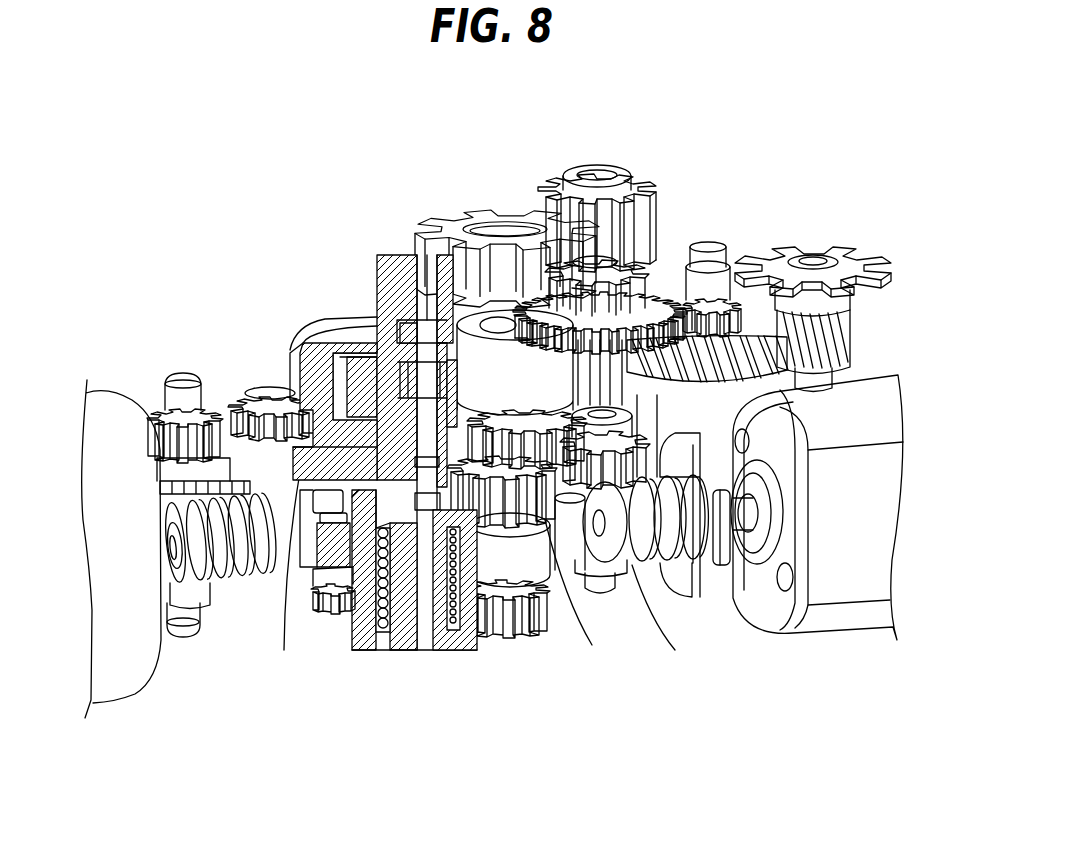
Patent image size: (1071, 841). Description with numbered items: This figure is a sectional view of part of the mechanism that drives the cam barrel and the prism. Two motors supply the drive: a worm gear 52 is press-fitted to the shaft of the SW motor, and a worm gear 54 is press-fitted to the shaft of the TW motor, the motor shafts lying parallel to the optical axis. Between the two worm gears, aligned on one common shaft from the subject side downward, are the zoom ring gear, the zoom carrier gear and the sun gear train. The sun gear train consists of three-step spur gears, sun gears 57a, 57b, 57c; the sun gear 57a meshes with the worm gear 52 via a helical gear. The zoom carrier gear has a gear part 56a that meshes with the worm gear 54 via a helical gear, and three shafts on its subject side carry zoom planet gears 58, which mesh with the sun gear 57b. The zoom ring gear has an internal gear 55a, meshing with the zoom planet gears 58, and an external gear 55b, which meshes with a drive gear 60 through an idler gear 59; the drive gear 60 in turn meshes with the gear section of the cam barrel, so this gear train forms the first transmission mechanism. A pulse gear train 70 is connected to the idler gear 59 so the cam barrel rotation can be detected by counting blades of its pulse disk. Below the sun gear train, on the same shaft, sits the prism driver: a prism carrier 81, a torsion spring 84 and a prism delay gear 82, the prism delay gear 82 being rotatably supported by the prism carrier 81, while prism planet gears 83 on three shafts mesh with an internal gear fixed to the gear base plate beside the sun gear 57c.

The worm gear 52 is at (663, 572).
The worm gear 54 is at (228, 583).
The internal gear 55a is at (302, 342).
The external gear 55b is at (390, 297).
The gear part 56a is at (545, 560).
The sun gear 57a is at (297, 555).
The sun gear 57b is at (340, 397).
The sun gear 57c is at (365, 615).
The zoom planet gears 58 is at (337, 387).
The idler gear 59 is at (413, 235).
The drive gear 60 is at (637, 180).
The pulse gear train 70 is at (772, 250).
The prism carrier 81 is at (493, 655).
The prism delay gear 82 is at (383, 648).
The prism planet gears 83 is at (483, 560).
The torsion spring 84 is at (408, 650).